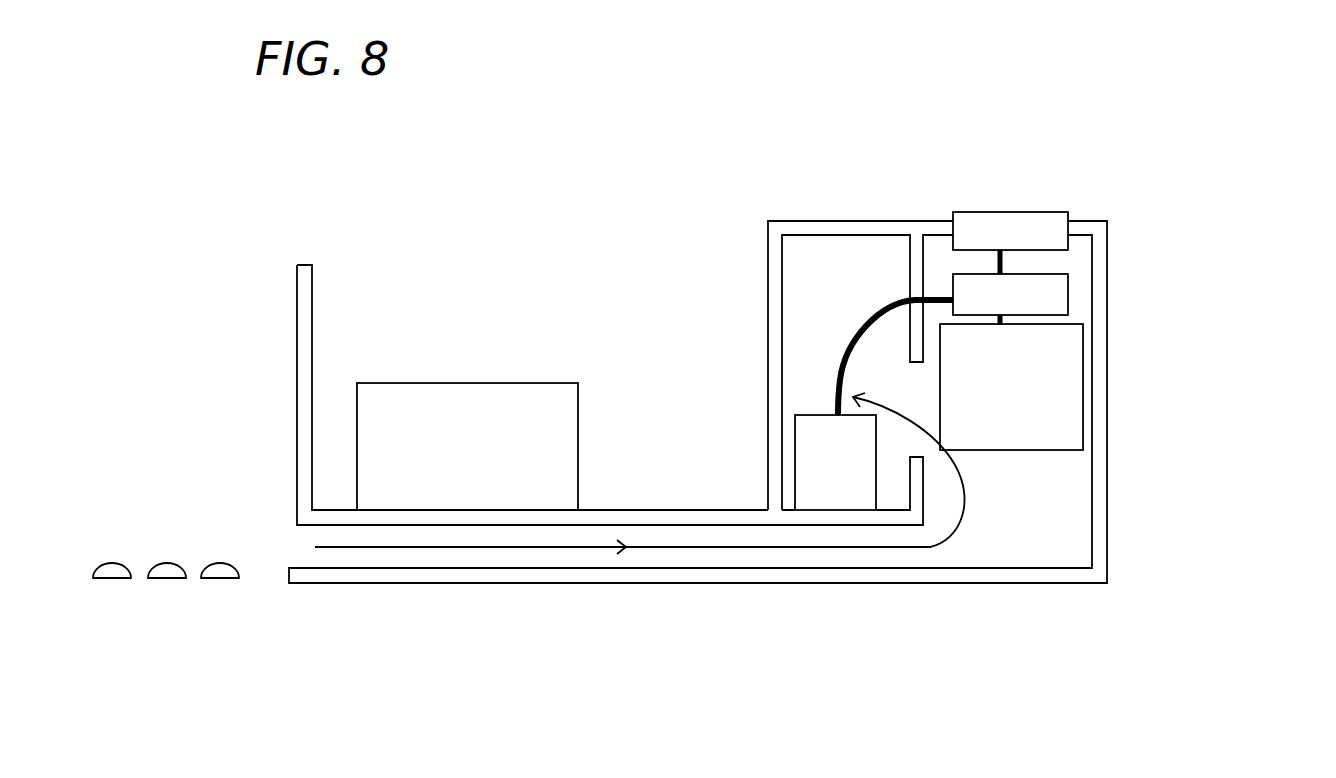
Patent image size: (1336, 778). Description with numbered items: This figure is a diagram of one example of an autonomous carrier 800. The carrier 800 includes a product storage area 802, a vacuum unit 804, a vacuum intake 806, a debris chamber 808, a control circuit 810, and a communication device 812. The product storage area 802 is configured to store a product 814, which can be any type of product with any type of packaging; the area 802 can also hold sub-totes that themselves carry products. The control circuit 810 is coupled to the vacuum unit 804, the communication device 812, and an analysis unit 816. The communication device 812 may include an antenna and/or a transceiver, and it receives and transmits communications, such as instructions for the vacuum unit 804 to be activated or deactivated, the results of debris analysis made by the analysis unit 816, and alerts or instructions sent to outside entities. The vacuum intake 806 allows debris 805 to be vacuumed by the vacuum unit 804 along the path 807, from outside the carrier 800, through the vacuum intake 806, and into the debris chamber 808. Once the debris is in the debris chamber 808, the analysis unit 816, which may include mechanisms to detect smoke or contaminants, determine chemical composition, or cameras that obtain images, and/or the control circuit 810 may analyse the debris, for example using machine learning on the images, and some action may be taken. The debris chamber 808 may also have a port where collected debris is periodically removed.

The autonomous carrier 800 is at (1216, 328).
The product storage area 802 is at (661, 243).
The vacuum unit 804 is at (1082, 395).
The debris 805 is at (243, 557).
The vacuum intake 806 is at (337, 560).
The path 807 is at (557, 547).
The debris chamber 808 is at (809, 295).
The control circuit 810 is at (1068, 298).
The communication device 812 is at (1010, 225).
The product 814 is at (462, 422).
The analysis unit 816 is at (828, 473).